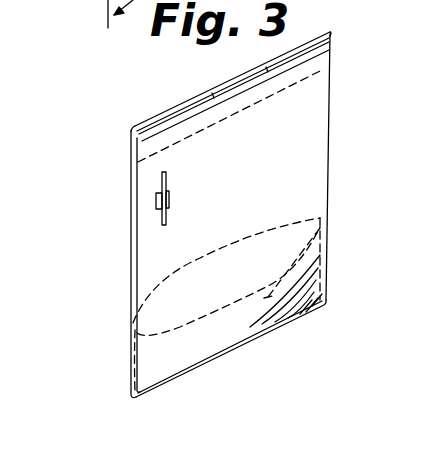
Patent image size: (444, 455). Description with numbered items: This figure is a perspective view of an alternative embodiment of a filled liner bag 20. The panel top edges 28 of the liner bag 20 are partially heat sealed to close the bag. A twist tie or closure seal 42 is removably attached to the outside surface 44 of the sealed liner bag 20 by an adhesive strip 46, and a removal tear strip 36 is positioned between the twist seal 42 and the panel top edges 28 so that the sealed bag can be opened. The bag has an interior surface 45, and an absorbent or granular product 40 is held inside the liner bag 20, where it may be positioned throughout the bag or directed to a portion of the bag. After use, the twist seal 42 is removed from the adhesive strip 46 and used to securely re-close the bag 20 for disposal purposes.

The liner bag 20 is at (245, 215).
The panel top edges 28 is at (163, 122).
The removal tear strip 36 is at (295, 80).
The absorbent or granular product 40 is at (328, 281).
The twist tie or closure seal 42 is at (162, 179).
The outside surface 44 is at (172, 245).
The interior surface 45 is at (312, 201).
The adhesive strip 46 is at (157, 200).